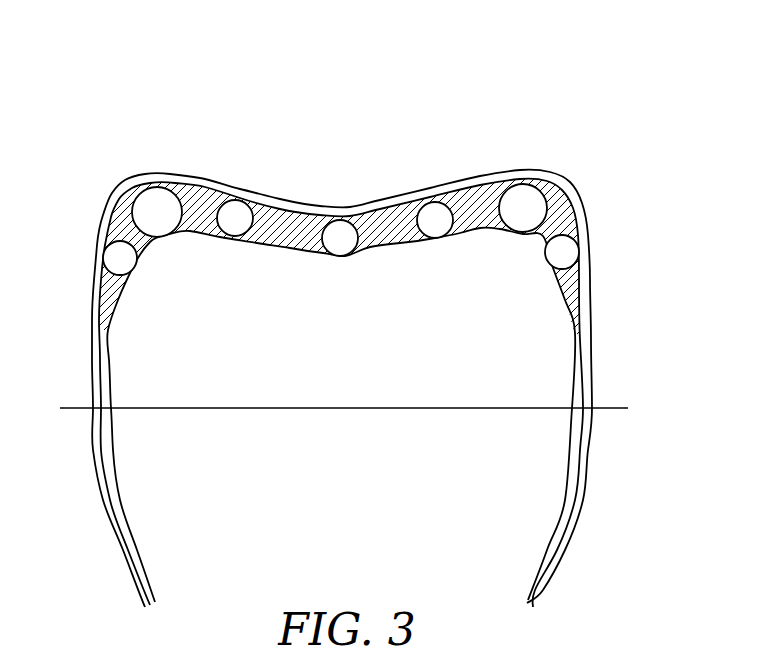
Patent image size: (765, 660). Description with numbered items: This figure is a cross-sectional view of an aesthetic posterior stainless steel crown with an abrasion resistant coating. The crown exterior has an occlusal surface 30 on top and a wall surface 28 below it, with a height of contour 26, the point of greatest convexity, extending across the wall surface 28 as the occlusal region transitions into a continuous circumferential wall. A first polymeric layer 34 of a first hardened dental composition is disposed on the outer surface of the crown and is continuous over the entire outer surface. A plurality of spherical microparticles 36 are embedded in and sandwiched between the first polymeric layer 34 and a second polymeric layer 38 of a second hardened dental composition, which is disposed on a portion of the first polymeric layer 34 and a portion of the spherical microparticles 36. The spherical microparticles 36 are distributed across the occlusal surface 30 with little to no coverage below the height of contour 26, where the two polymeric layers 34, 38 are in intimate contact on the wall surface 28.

The height of contour 26 is at (361, 410).
The wall surface 28 is at (112, 455).
The occlusal surface 30 is at (385, 250).
The first polymeric layer 34 is at (578, 451).
The spherical microparticles 36 is at (230, 217).
The second polymeric layer 38 is at (287, 220).